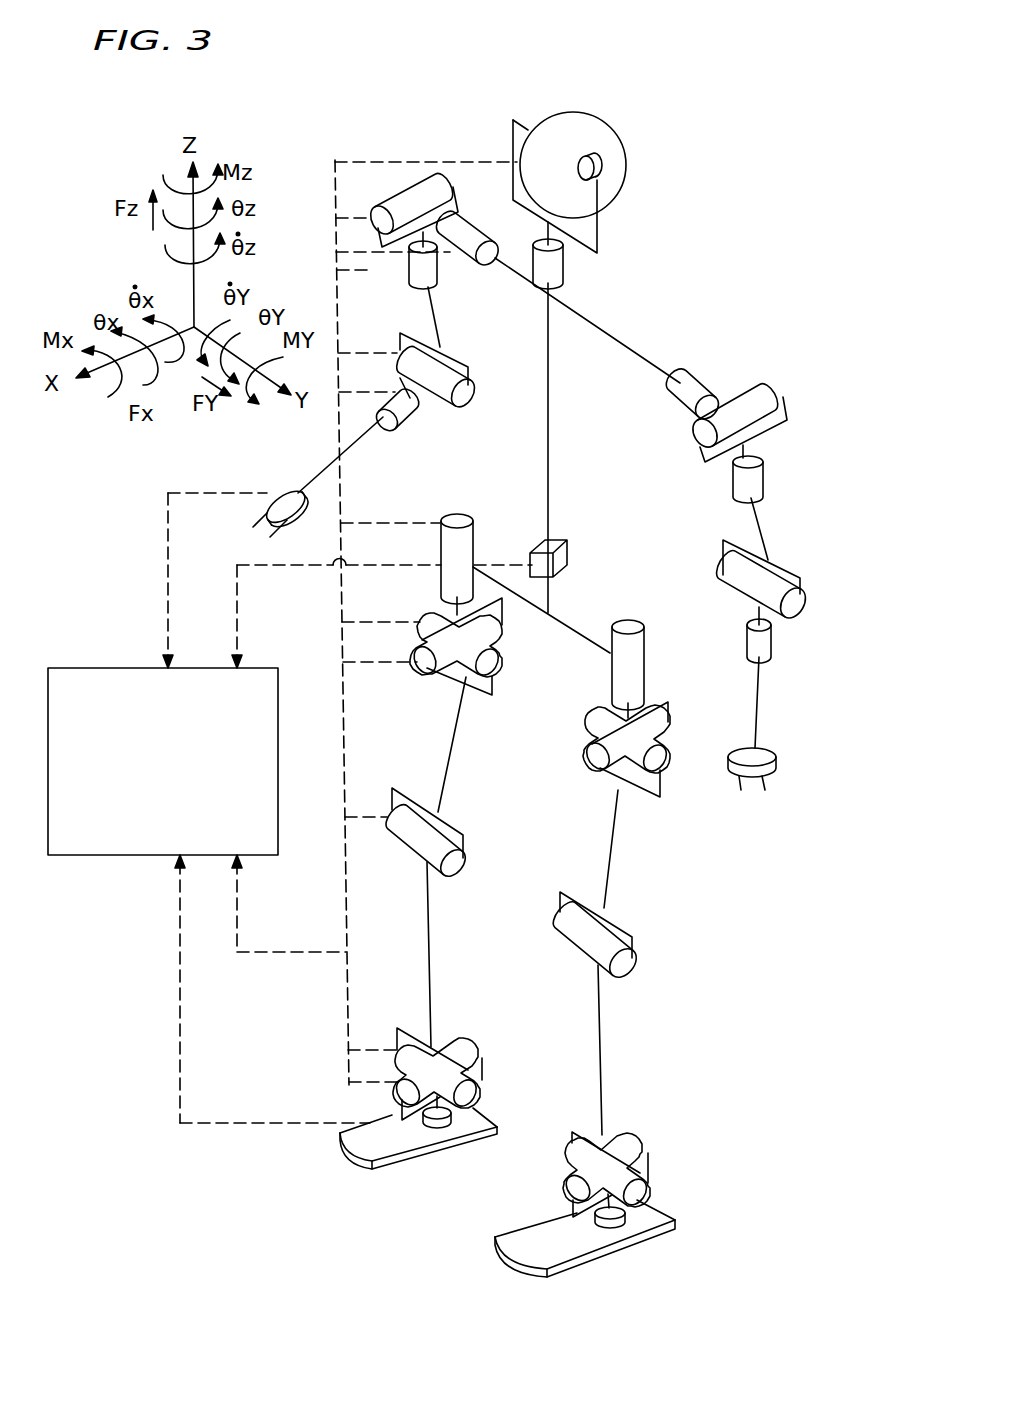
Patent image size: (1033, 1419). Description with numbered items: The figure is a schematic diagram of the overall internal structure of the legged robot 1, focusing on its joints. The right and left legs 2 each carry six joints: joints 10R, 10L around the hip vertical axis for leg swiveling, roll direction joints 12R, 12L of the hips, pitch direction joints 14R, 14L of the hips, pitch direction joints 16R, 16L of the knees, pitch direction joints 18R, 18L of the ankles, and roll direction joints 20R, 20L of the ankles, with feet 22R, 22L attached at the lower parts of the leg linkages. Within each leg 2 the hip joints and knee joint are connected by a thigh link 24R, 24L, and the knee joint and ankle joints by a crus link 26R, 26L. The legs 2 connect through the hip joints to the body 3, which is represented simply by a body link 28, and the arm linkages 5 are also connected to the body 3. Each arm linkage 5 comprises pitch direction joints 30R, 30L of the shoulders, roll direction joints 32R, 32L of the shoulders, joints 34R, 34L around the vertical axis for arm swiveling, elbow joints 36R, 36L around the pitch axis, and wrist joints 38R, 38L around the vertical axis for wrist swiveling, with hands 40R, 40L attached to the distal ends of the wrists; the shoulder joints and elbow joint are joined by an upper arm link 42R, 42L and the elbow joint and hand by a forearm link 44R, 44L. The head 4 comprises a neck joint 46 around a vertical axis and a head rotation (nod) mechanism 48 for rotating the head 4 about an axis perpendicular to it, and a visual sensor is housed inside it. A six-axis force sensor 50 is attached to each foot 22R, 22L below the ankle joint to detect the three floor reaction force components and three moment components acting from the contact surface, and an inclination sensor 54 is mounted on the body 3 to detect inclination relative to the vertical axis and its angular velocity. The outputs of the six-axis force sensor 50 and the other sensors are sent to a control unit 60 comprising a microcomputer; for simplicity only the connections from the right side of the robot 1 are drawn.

The robot 1 is at (695, 305).
The leg 2 is at (727, 894).
The body 3 is at (584, 274).
The head 4 is at (635, 177).
The arm linkage 5 is at (796, 444).
The hip joint around vertical axis 10R is at (461, 515).
The hip joint around vertical axis 10L is at (641, 680).
The hip roll direction joint 12R is at (432, 662).
The hip roll direction joint 12L is at (656, 742).
The hip pitch direction joint 14R is at (435, 620).
The hip pitch direction joint 14L is at (667, 752).
The knee joint 16R is at (451, 872).
The knee joint 16L is at (641, 962).
The ankle pitch direction joint 18R is at (476, 1092).
The ankle pitch direction joint 18L is at (651, 1191).
The ankle roll direction joint 20R is at (463, 1050).
The ankle roll direction joint 20L is at (632, 1144).
The foot 22R is at (365, 1138).
The foot 22L is at (678, 1224).
The thigh link 24R is at (441, 797).
The thigh link 24L is at (612, 870).
The crus link 26R is at (428, 936).
The crus link 26L is at (606, 1050).
The body link 28 is at (551, 393).
The shoulder pitch direction joint 30R is at (473, 237).
The shoulder pitch direction joint 30L is at (697, 390).
The shoulder roll direction joint 32R is at (440, 188).
The shoulder roll direction joint 32L is at (760, 397).
The arm swiveling joint 34R is at (440, 267).
The arm swiveling joint 34L is at (758, 482).
The elbow joint 36R is at (466, 390).
The elbow joint 36L is at (800, 598).
The wrist joint 38R is at (410, 418).
The wrist joint 38L is at (765, 643).
The hand 40R is at (292, 538).
The hand 40L is at (769, 770).
The upper arm link 42R is at (437, 321).
The upper arm link 42L is at (763, 532).
The forearm link 44R is at (398, 348).
The forearm link 44L is at (760, 607).
The neck joint 46 is at (562, 278).
The head rotation mechanism 48 is at (594, 165).
The six-axis force sensor 50 is at (441, 1127).
The inclination sensor 54 is at (560, 548).
The control unit 60 is at (92, 668).